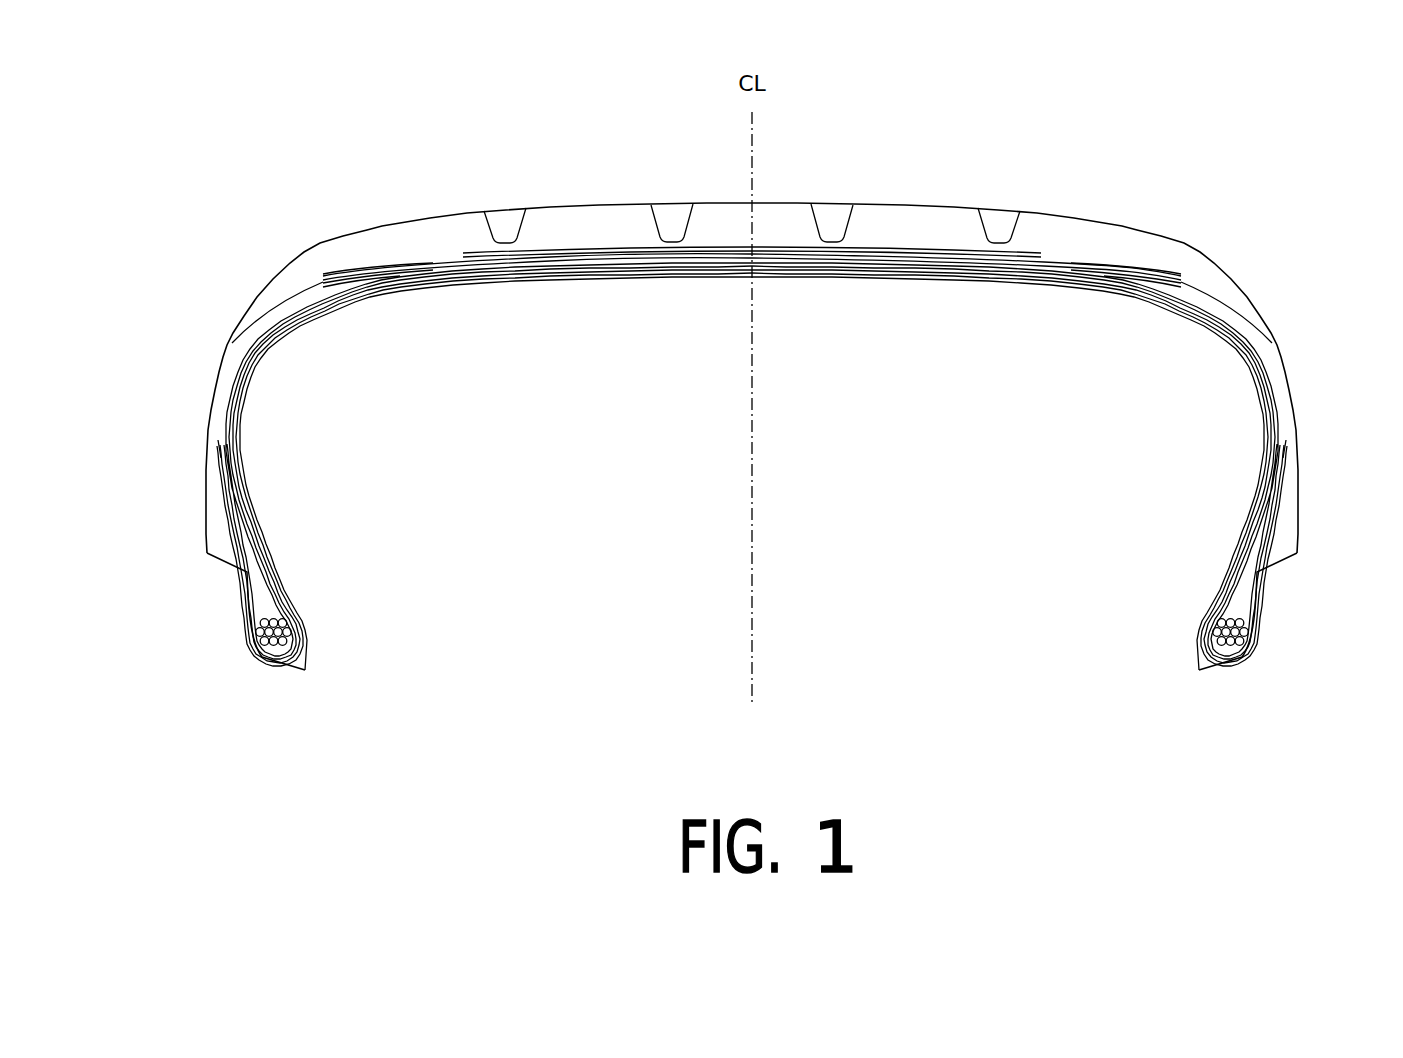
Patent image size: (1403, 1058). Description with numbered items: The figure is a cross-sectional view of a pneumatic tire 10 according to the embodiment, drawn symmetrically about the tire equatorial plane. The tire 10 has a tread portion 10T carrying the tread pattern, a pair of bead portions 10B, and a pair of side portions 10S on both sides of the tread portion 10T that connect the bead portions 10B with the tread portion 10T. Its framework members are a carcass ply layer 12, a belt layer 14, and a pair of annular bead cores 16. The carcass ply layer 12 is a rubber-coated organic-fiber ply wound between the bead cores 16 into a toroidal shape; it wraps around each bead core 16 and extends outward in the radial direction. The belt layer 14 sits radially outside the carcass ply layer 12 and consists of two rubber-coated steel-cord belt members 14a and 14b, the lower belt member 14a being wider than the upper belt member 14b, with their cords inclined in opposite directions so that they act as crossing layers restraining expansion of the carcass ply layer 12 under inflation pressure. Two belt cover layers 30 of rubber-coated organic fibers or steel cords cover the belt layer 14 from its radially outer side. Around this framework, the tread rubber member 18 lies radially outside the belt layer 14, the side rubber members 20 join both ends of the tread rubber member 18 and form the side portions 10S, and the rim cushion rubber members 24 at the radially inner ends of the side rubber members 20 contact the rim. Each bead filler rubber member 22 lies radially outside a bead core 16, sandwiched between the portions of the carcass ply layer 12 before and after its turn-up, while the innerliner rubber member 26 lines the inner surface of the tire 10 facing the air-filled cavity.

The pneumatic tire 10 is at (1158, 168).
The tread portion 10T is at (910, 197).
The side portions 10S is at (200, 417).
The bead portions 10B is at (322, 653).
The carcass ply layer 12 is at (272, 330).
The belt layer 14 is at (752, 331).
The lower layer belt member 14a is at (594, 272).
The upper layer belt member 14b is at (610, 252).
The bead cores 16 is at (262, 660).
The tread rubber member 18 is at (1140, 252).
The side rubber members 20 is at (235, 354).
The bead filler rubber members 22 is at (262, 576).
The rim cushion rubber members 24 is at (237, 585).
The innerliner rubber member 26 is at (497, 281).
The belt cover layers 30 is at (366, 262).